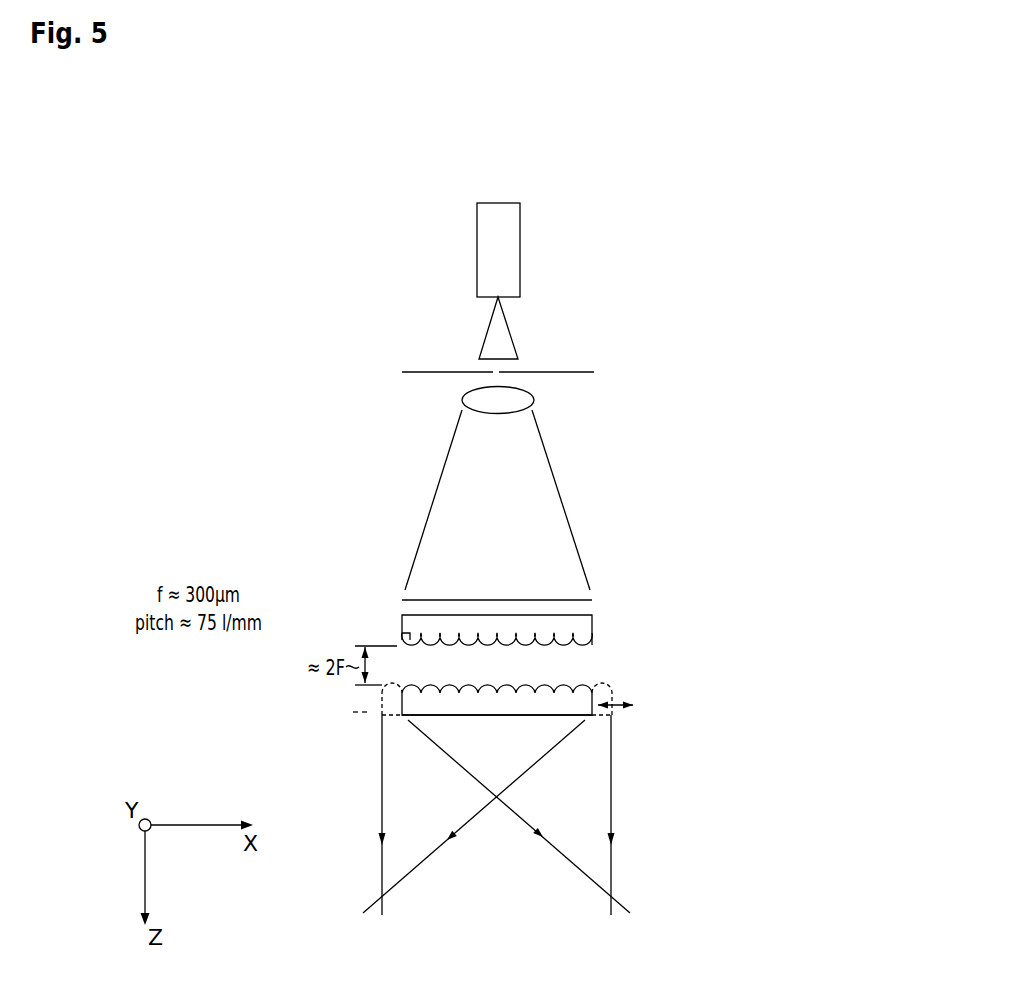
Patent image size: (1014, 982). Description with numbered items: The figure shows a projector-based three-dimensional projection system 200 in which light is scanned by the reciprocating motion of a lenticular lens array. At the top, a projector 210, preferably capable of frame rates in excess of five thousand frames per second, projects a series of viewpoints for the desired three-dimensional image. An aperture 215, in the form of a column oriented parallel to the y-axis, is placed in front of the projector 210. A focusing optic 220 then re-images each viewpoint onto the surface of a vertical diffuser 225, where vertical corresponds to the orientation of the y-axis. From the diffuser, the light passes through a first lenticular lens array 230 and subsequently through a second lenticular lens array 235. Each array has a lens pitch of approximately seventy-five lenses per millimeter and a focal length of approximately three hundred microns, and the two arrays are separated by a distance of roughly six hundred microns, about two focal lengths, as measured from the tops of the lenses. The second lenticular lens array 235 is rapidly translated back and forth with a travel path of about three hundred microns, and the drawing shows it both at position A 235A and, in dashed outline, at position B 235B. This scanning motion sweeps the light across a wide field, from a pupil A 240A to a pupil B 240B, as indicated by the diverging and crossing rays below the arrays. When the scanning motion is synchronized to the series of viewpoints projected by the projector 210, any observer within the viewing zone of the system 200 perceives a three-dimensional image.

The 3D projection system 200 is at (298, 356).
The projector 210 is at (521, 247).
The aperture 215 is at (548, 371).
The focusing optic 220 is at (535, 395).
The vertical diffuser 225 is at (592, 600).
The first lenticular lens array 230 is at (593, 627).
The second lenticular lens array 235 is at (565, 685).
The second lenticular lens array at position A 235A is at (523, 707).
The second lenticular lens array at position B 235B is at (613, 690).
The pupil A 240A is at (380, 846).
The pupil B 240B is at (610, 846).